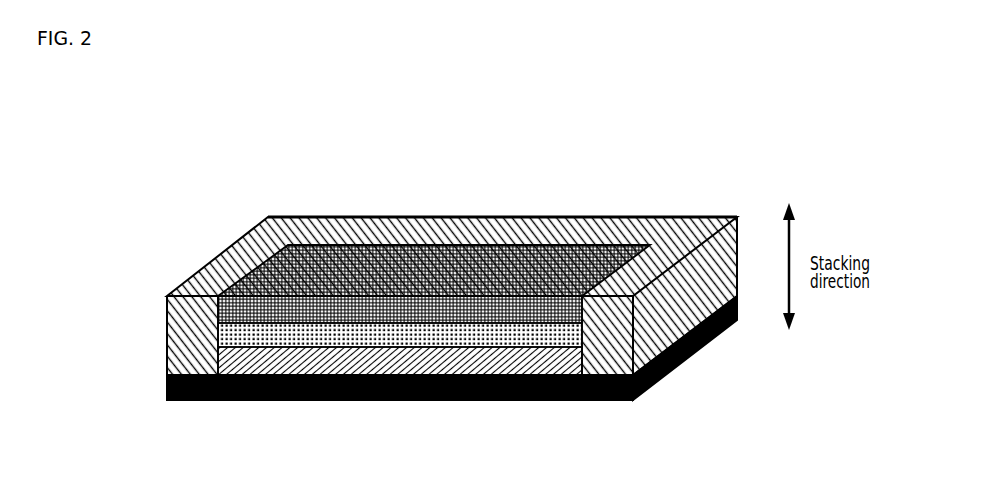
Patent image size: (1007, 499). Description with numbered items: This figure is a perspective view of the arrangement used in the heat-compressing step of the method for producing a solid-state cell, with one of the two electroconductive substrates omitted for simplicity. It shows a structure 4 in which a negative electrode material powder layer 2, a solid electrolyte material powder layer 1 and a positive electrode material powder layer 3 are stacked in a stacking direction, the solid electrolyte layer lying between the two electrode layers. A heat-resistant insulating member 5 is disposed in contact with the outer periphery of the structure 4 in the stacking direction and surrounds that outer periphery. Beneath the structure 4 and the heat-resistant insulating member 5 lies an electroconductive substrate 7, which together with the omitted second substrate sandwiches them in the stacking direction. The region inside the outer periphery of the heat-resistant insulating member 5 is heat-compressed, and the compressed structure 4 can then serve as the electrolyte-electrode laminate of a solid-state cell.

The solid electrolyte material powder layer 1 is at (240, 336).
The negative electrode material powder layer 2 is at (240, 309).
The positive electrode material powder layer 3 is at (240, 363).
The structure 4 is at (102, 282).
The heat-resistant insulating member 5 is at (601, 224).
The electroconductive substrate 7 is at (339, 385).